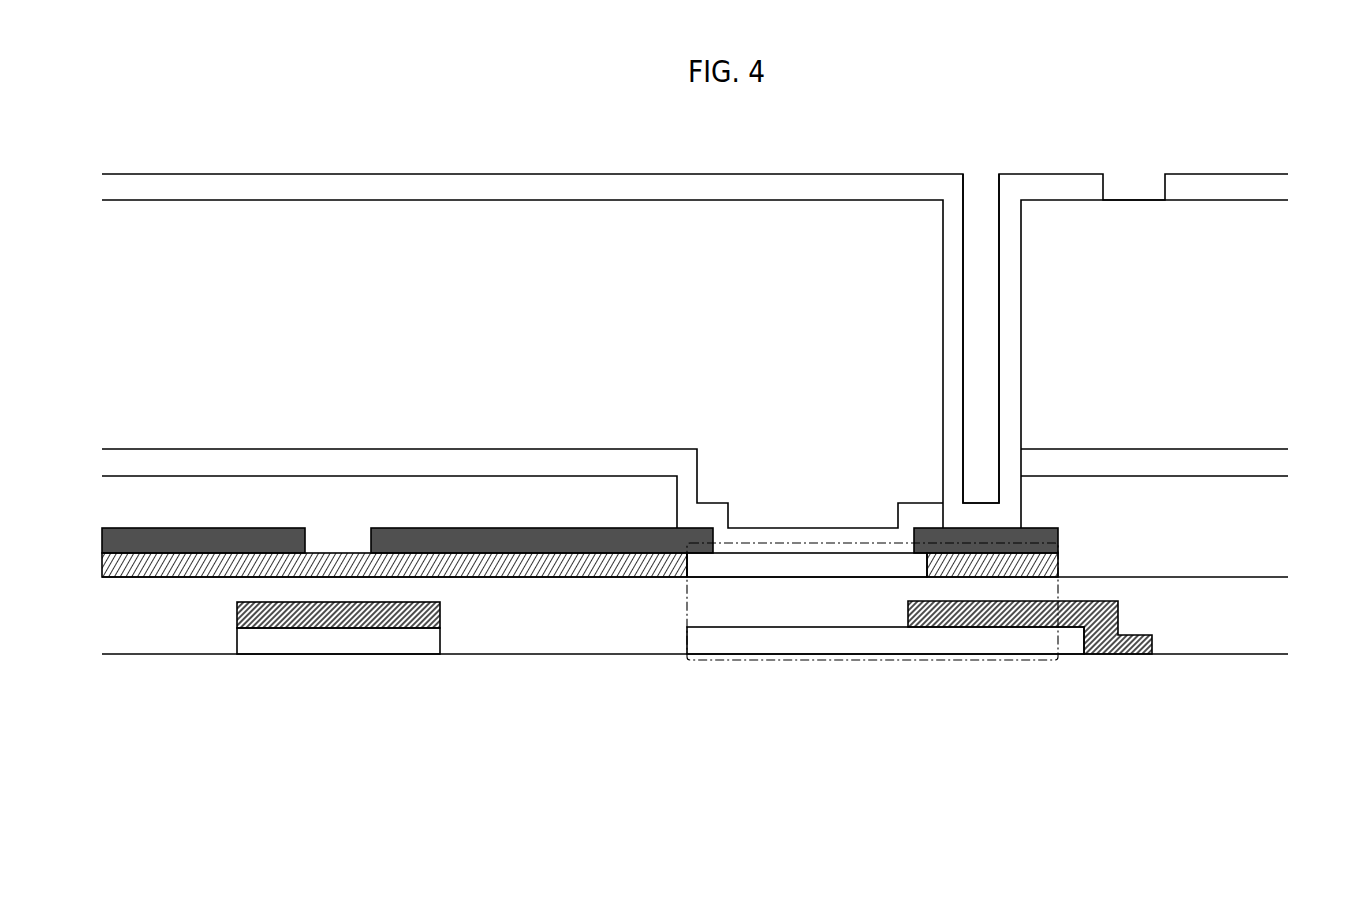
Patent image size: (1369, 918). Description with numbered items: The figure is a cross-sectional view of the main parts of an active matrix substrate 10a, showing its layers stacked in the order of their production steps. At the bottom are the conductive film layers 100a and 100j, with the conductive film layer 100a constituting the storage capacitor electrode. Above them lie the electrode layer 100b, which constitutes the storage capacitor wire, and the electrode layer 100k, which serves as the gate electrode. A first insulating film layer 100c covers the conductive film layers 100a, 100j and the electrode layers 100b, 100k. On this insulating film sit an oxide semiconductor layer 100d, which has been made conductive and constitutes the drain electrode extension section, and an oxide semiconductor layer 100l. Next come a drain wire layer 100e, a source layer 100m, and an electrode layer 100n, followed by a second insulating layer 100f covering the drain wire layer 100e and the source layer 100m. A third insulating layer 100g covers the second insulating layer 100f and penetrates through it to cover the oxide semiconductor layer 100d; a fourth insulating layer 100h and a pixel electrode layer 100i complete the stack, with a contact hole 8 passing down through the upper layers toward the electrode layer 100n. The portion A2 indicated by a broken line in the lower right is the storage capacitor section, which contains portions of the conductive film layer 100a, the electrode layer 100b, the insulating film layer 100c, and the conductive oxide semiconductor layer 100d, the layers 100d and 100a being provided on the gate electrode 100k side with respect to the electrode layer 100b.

The display device (array substrate) 10a is at (705, 152).
The contact hole 8 is at (983, 193).
The pixel electrode layer 100i is at (1263, 182).
The fourth insulating layer 100h is at (1263, 297).
The third insulating layer 100g is at (417, 463).
The second insulating layer 100f is at (273, 503).
The drain wire layer 100e is at (413, 545).
The oxide semiconductor layer 100d is at (833, 565).
The first insulating film layer 100c is at (1263, 620).
The electrode layer 100b is at (1100, 615).
The conductive film layer 100a is at (940, 640).
The conductive film layer 100j is at (333, 642).
The electrode layer 100k is at (430, 617).
The oxide semiconductor layer 100l is at (158, 562).
The source layer 100m is at (161, 545).
The electrode layer 100n is at (1047, 538).
The storage capacitor section A2 is at (812, 662).